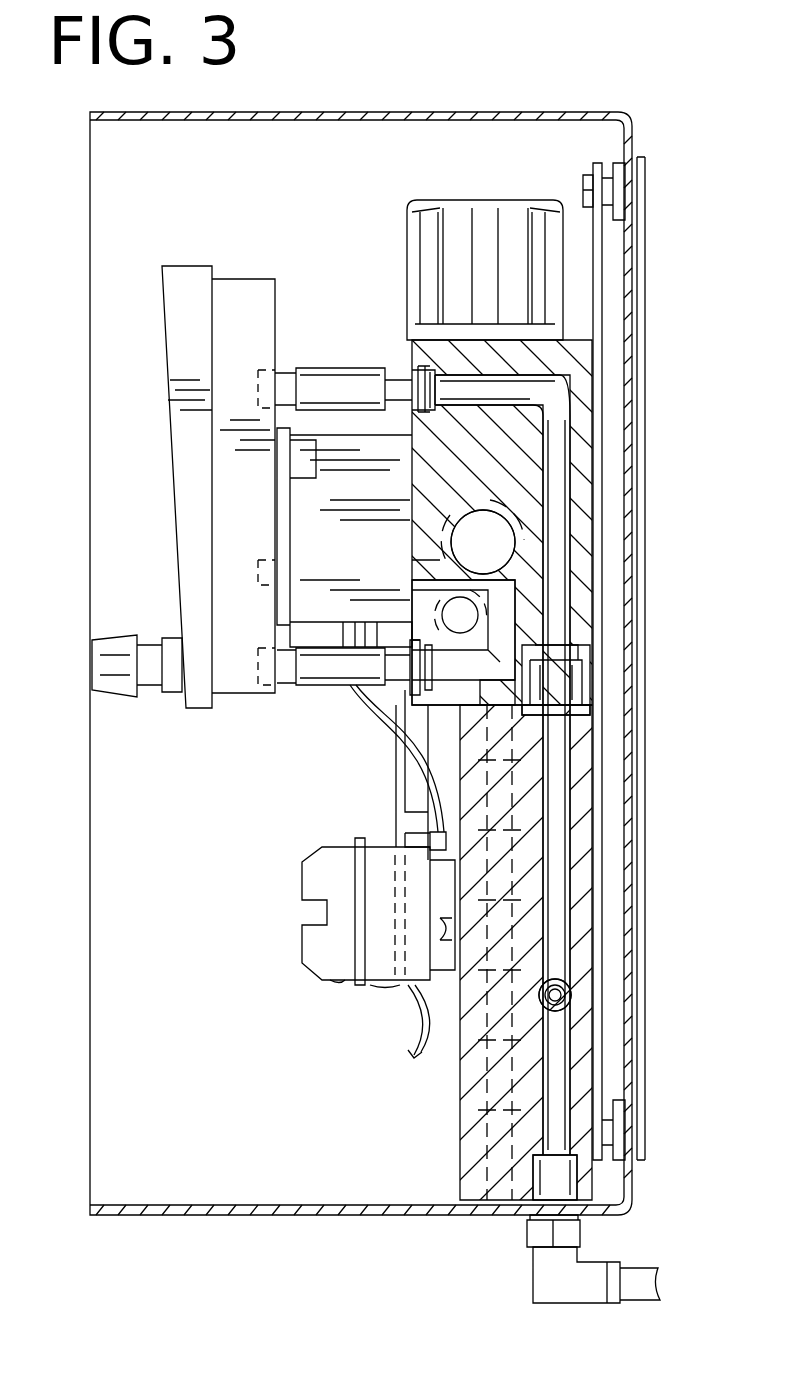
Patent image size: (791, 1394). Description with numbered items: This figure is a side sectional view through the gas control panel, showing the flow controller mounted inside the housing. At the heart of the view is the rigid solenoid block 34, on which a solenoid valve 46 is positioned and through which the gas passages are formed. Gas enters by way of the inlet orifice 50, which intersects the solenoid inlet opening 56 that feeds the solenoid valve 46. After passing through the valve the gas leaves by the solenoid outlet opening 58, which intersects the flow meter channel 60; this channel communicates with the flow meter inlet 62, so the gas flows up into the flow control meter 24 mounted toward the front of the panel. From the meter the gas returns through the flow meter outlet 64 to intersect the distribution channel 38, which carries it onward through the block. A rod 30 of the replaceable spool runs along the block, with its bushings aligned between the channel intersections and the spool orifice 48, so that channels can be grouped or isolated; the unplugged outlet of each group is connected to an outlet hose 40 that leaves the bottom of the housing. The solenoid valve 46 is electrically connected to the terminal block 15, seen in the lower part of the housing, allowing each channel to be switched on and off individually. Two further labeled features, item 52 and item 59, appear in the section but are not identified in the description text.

The terminal block 15 is at (337, 977).
The flow control meter 24 is at (192, 397).
The rod 30 is at (556, 995).
The solenoid block 34 is at (585, 443).
The distribution channel 38 is at (556, 425).
The outlet hose 40 is at (628, 1273).
The solenoid valve 46 is at (347, 458).
The spool orifice 48 is at (572, 990).
The inlet orifice 50 is at (500, 530).
The valve bore 52 is at (462, 617).
The solenoid inlet opening 56 is at (412, 552).
The solenoid outlet opening 58 is at (417, 585).
The valve member 59 is at (428, 612).
The flow meter channel 60 is at (500, 655).
The flow meter inlet 62 is at (428, 680).
The flow meter outlet 64 is at (425, 372).